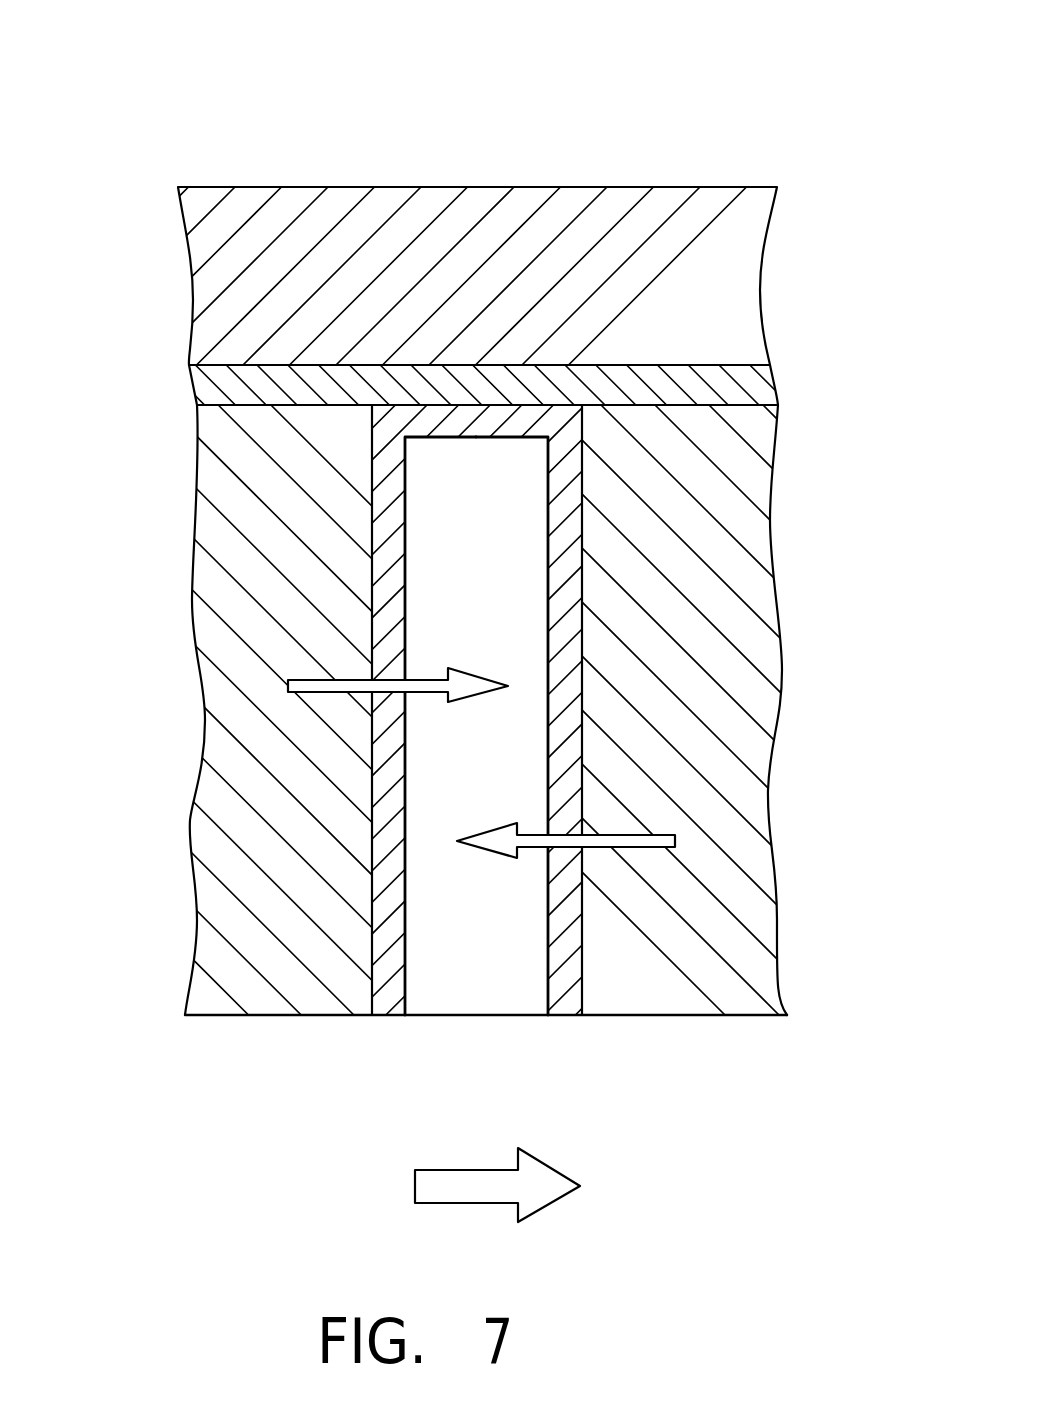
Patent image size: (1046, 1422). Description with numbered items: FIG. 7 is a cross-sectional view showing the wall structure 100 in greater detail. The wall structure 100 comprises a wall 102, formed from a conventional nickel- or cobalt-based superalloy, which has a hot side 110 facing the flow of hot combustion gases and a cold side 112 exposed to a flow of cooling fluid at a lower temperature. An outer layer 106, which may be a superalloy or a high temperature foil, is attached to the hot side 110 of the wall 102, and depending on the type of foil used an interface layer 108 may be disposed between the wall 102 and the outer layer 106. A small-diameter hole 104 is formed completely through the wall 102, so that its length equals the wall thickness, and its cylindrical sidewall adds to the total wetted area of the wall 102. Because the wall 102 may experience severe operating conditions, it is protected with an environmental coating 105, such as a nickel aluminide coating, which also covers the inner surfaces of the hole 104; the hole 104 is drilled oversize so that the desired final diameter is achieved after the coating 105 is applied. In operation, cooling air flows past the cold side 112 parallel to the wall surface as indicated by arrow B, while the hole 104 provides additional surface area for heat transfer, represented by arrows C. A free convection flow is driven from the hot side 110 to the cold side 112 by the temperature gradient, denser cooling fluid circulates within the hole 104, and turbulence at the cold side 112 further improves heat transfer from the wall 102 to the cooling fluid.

The wall structure 100 is at (748, 95).
The wall 102 is at (737, 640).
The holes 104 is at (567, 940).
The environmental coating 105 is at (395, 1003).
The outer layer 106 is at (733, 260).
The interface layer 108 is at (747, 388).
The hot side 110 is at (205, 403).
The cold side 112 is at (758, 1015).
The arrows C is at (425, 678).
The arrow B is at (477, 1168).